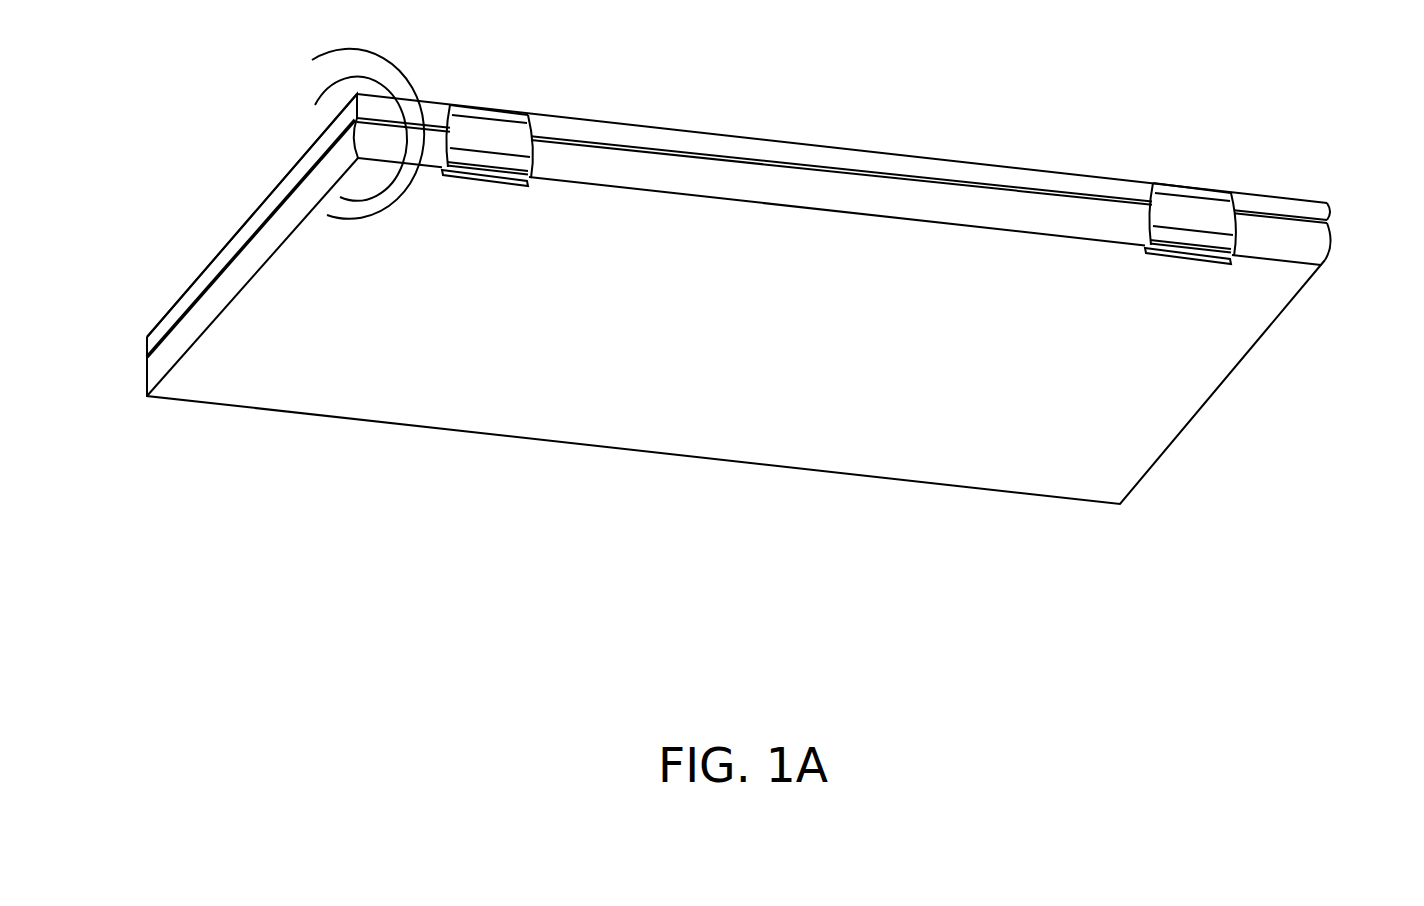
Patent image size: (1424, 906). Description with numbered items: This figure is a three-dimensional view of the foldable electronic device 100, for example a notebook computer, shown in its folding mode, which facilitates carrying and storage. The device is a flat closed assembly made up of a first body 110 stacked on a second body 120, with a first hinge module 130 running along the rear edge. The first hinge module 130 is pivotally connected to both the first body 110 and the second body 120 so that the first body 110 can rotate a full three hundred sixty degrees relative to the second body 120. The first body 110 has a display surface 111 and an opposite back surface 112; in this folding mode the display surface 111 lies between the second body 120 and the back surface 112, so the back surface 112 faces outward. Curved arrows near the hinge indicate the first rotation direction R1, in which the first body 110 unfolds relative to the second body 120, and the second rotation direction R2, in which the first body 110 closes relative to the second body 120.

The foldable electronic device 100 is at (1401, 537).
The first body 110 is at (268, 205).
The display surface 111 is at (183, 317).
The back surface 112 is at (177, 300).
The second body 120 is at (238, 270).
The first hinge module 130 is at (492, 124).
The first rotation direction R1 is at (340, 197).
The second rotation direction R2 is at (318, 47).